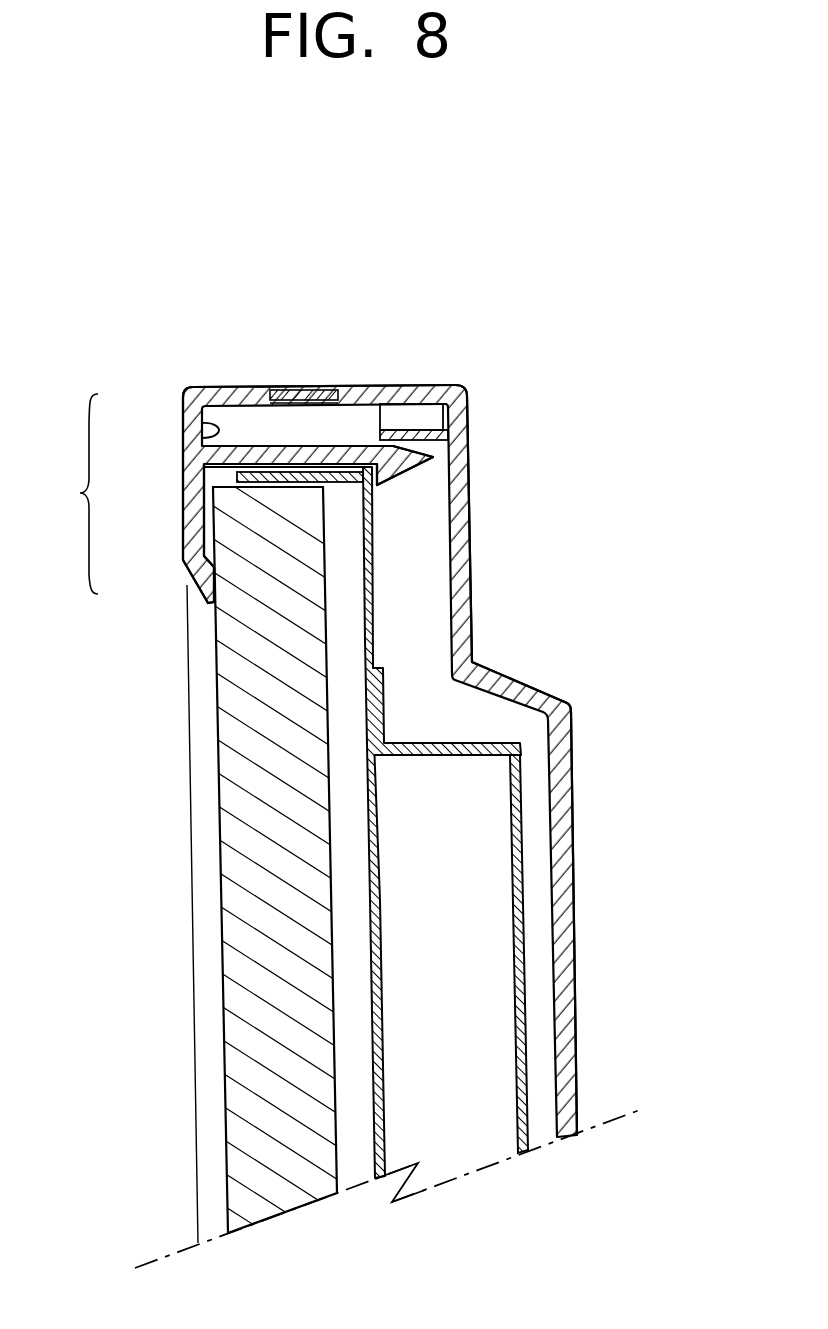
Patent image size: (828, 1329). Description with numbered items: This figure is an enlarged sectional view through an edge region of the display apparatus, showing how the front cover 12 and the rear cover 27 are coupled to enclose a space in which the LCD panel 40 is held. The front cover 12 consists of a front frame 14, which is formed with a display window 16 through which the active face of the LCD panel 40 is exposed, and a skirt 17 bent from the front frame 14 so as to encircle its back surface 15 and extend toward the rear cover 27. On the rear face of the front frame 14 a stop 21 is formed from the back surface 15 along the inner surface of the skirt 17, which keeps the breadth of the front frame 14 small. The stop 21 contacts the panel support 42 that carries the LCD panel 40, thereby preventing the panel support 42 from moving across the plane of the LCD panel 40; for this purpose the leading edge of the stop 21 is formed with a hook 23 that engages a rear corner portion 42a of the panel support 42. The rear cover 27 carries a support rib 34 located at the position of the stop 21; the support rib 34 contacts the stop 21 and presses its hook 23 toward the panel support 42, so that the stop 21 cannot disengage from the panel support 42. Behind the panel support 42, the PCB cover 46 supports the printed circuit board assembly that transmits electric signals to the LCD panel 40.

The front cover 12 is at (73, 506).
The front frame 14 is at (190, 492).
The back surface of front frame 15 is at (202, 433).
The display window 16 is at (212, 603).
The skirt 17 is at (200, 379).
The stop 21 is at (318, 445).
The hook 23 is at (402, 476).
The rear cover 27 is at (460, 543).
The support rib 34 is at (410, 415).
The LCD panel 40 is at (245, 870).
The panel support 42 is at (383, 978).
The rear corner portion of panel support 42a is at (352, 484).
The PCB cover 46 is at (518, 813).